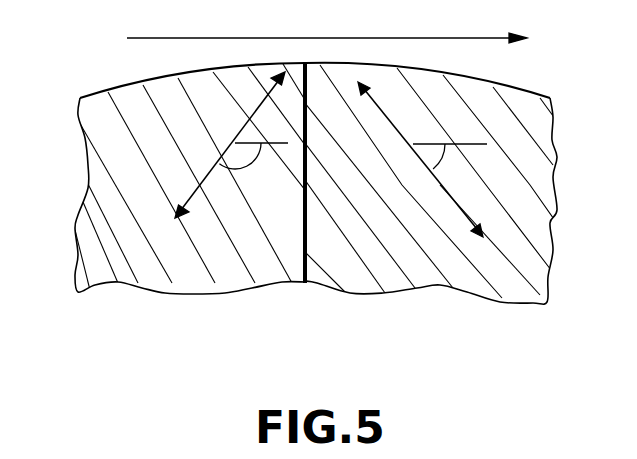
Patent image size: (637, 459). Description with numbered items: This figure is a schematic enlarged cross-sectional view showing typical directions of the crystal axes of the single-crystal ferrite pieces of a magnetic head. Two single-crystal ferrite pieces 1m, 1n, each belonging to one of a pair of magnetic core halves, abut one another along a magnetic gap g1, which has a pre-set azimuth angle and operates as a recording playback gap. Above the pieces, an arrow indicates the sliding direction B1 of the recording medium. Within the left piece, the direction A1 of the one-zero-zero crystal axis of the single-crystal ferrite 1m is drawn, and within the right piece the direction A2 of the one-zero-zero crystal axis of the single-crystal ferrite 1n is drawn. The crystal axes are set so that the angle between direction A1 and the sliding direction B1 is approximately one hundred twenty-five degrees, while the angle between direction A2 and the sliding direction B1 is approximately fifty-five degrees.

The single-crystal ferrite piece 1m is at (166, 268).
The single-crystal ferrite piece 1n is at (428, 270).
The magnetic gap g1 is at (311, 266).
The sliding direction of the recording medium B1 is at (327, 24).
The direction of the 100 crystal axis of the single-crystal ferrite 1m A1 is at (224, 145).
The direction of the 100 crystal axis of the single-crystal ferrite 1n A2 is at (419, 159).